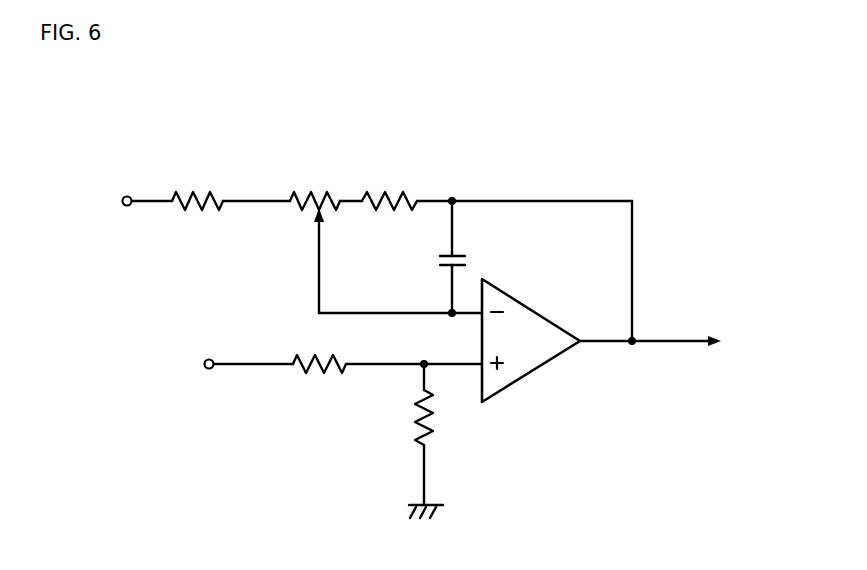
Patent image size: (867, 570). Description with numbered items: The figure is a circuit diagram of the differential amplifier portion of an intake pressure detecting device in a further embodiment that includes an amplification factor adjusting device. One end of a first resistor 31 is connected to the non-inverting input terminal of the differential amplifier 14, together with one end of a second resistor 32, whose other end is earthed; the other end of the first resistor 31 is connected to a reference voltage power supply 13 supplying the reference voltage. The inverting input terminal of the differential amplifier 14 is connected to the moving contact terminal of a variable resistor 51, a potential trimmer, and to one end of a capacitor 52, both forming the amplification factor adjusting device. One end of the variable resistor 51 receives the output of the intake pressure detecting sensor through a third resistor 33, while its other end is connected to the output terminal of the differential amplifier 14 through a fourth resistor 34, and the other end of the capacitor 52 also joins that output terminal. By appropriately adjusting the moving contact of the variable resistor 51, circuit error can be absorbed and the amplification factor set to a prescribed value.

The reference voltage power supply 13 is at (202, 378).
The differential amplifier 14 is at (538, 372).
The resistor 31 is at (319, 382).
The resistor 32 is at (448, 430).
The resistor 33 is at (195, 216).
The resistor 34 is at (418, 190).
The variable resistor 51 is at (288, 184).
The capacitor 52 is at (472, 262).